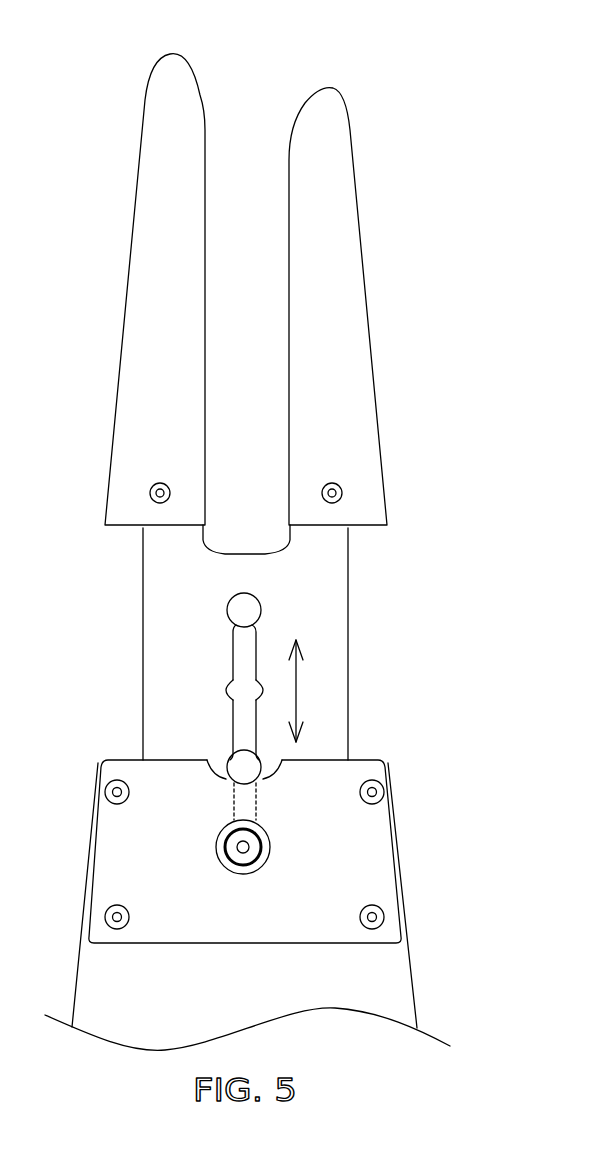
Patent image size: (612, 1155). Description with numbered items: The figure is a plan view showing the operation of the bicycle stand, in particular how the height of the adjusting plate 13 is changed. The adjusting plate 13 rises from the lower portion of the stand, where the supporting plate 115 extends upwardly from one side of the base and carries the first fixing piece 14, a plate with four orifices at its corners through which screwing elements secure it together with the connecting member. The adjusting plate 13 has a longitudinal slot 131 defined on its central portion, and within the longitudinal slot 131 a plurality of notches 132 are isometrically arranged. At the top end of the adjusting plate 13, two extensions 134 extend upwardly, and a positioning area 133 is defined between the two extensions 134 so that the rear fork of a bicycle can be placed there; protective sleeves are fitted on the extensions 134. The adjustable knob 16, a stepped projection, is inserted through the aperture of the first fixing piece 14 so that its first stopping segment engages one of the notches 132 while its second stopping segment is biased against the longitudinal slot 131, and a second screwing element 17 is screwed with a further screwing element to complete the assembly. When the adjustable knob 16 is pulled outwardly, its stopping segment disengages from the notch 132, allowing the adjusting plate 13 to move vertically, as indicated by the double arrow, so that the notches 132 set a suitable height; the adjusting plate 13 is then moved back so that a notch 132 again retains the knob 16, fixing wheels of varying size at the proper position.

The adjusting plate 13 is at (327, 611).
The longitudinal slot 131 is at (240, 650).
The notches 132 is at (238, 686).
The positioning area 133 is at (248, 131).
The extensions 134 is at (354, 313).
The first fixing piece 14 is at (365, 848).
The adjustable knob 16 is at (224, 857).
The second screwing element 17 is at (258, 855).
The supporting plate 115 is at (370, 982).